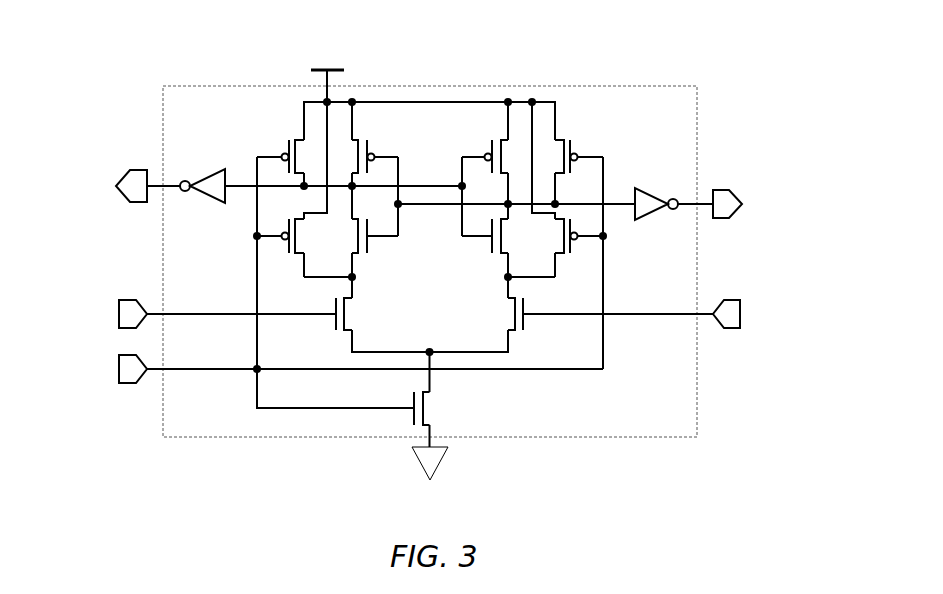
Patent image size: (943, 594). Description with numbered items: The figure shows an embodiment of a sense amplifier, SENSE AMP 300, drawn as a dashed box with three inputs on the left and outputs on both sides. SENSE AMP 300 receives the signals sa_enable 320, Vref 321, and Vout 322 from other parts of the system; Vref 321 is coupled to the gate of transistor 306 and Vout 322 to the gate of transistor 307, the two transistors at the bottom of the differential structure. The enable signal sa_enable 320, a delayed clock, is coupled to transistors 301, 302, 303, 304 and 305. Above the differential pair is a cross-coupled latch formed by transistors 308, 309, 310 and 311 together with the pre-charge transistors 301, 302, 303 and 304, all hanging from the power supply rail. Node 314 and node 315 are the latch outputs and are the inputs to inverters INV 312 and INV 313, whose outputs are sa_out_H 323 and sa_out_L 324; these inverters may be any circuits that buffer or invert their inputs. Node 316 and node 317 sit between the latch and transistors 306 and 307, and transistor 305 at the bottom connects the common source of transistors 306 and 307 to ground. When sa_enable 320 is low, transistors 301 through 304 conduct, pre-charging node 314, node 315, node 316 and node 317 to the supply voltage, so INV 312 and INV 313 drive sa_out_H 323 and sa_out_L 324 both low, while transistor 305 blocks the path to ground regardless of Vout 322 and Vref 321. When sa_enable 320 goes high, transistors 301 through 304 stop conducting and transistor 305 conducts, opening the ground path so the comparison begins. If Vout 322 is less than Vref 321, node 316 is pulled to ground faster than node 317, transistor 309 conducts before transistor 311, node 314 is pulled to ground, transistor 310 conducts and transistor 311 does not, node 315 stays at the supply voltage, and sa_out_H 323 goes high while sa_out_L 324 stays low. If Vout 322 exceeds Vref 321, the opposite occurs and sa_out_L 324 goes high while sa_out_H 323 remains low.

The sense amp 300 is at (492, 84).
The transistor Q301 301 is at (289, 157).
The transistor Q302 302 is at (289, 236).
The transistor Q303 303 is at (570, 157).
The transistor Q304 304 is at (570, 236).
The transistor Q305 305 is at (438, 408).
The transistor Q306 306 is at (355, 314).
The transistor Q307 307 is at (503, 314).
The transistor Q308 308 is at (364, 157).
The transistor Q309 309 is at (364, 236).
The transistor Q310 310 is at (495, 157).
The transistor Q311 311 is at (495, 236).
The inverter INV 312 is at (186, 207).
The inverter INV 313 is at (674, 187).
The node 314 is at (345, 180).
The node 315 is at (514, 212).
The node 316 is at (353, 276).
The node 317 is at (506, 276).
The sa_enable 320 is at (319, 370).
The Vref 321 is at (192, 314).
The Vout 322 is at (669, 314).
The sa_out_H 323 is at (95, 185).
The sa_out_L 324 is at (763, 202).